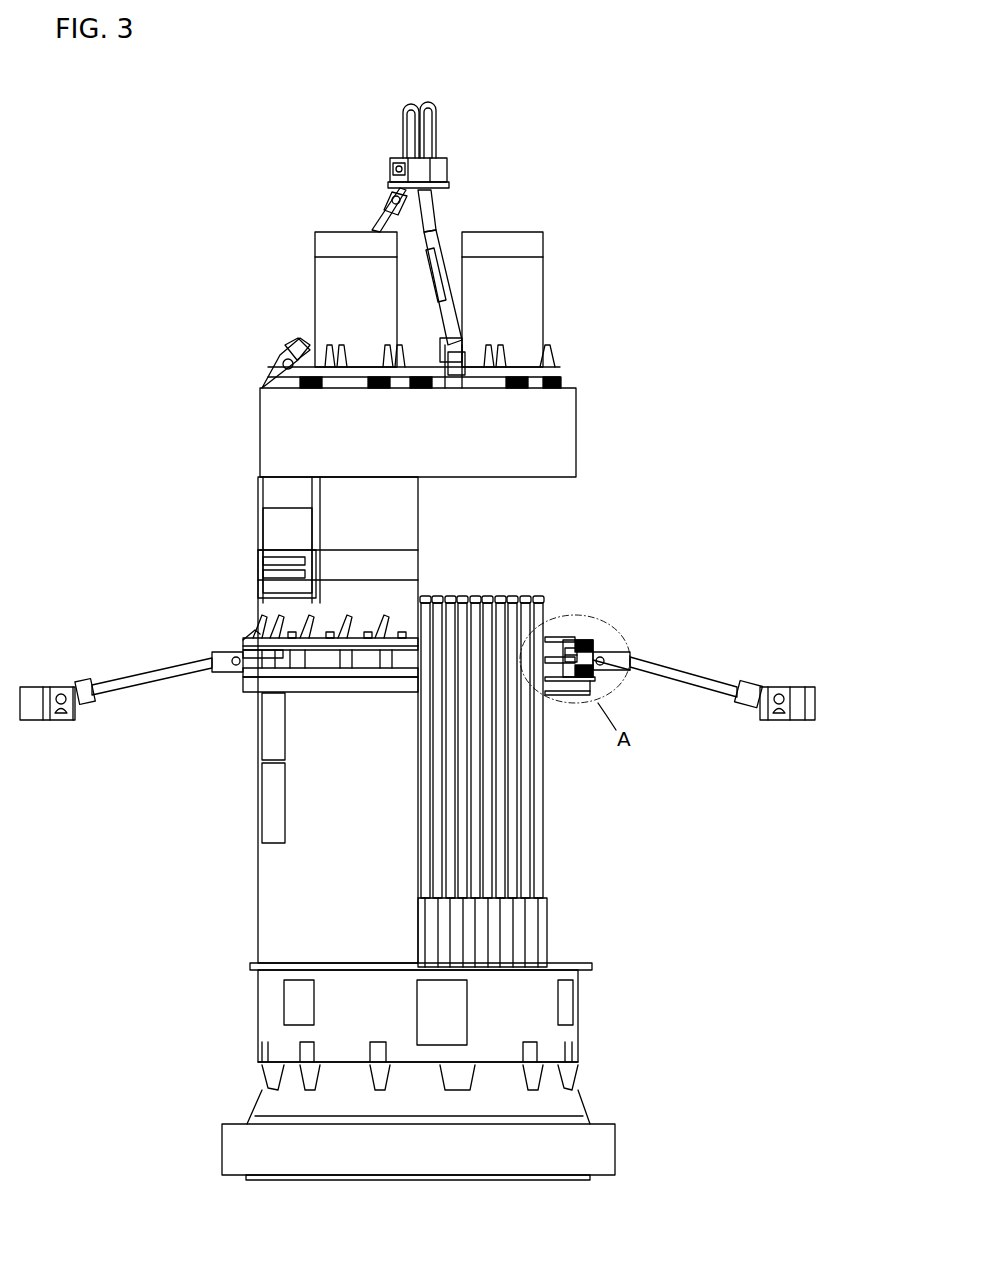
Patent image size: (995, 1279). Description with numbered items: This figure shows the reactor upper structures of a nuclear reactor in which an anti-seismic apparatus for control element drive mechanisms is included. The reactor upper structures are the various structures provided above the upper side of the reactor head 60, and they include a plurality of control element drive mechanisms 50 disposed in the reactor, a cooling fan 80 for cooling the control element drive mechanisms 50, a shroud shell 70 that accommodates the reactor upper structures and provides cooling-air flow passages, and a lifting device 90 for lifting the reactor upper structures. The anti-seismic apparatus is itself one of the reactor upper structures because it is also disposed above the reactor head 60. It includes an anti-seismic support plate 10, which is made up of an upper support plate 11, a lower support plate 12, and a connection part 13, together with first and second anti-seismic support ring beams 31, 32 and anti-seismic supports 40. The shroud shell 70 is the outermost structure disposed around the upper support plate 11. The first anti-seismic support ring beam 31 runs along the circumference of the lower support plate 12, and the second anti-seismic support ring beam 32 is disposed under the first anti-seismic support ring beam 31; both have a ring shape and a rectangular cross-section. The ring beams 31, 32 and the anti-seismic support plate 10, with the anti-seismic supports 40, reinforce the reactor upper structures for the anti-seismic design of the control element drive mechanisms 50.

The anti-seismic support plate 10 is at (595, 608).
The upper support plate 11 is at (556, 637).
The lower support plate 12 is at (568, 648).
The connection part 13 is at (580, 650).
The first anti-seismic support ring beam 31 is at (598, 652).
The second anti-seismic support ring beam 32 is at (600, 672).
The anti-seismic support 40 is at (130, 663).
The control element drive mechanism 50 is at (518, 777).
The reactor head 60 is at (567, 1105).
The shroud shell 70 is at (278, 915).
The cooling fan 80 is at (530, 292).
The lifting device 90 is at (428, 132).